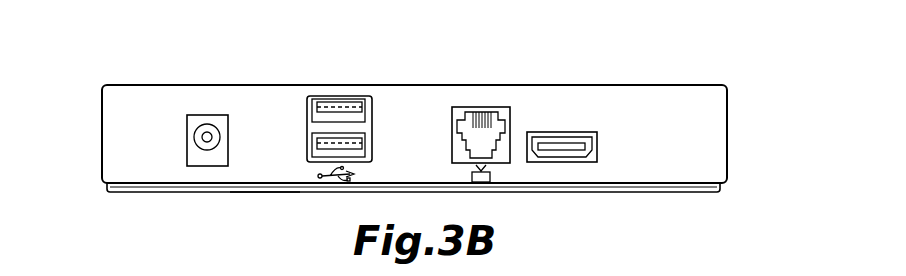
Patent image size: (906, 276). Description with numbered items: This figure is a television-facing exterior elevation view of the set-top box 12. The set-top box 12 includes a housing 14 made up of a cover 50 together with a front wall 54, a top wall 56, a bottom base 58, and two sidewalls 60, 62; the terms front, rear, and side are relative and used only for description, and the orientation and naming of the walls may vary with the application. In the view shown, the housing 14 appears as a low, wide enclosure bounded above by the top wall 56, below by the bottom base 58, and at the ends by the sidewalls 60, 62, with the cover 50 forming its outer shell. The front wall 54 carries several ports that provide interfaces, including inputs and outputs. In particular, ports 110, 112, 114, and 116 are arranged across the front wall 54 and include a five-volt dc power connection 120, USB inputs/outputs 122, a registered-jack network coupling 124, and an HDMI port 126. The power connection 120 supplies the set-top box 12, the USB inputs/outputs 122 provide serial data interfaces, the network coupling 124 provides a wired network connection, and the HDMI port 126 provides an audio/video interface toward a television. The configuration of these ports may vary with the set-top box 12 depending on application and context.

The set-top box 12 is at (128, 76).
The housing 14 is at (109, 192).
The cover 50 is at (695, 85).
The front wall 54 is at (137, 172).
The top wall 56 is at (172, 85).
The bottom base 58 is at (263, 192).
The sidewall 60 is at (102, 137).
The sidewall 62 is at (727, 133).
The port 110 is at (218, 118).
The port 112 is at (338, 96).
The port 114 is at (485, 107).
The port 116 is at (558, 132).
The 5V dc power connection 120 is at (205, 166).
The USB inputs/outputs 122 is at (323, 162).
The RJ-45 coupling 124 is at (500, 152).
The HDMI port 126 is at (590, 165).